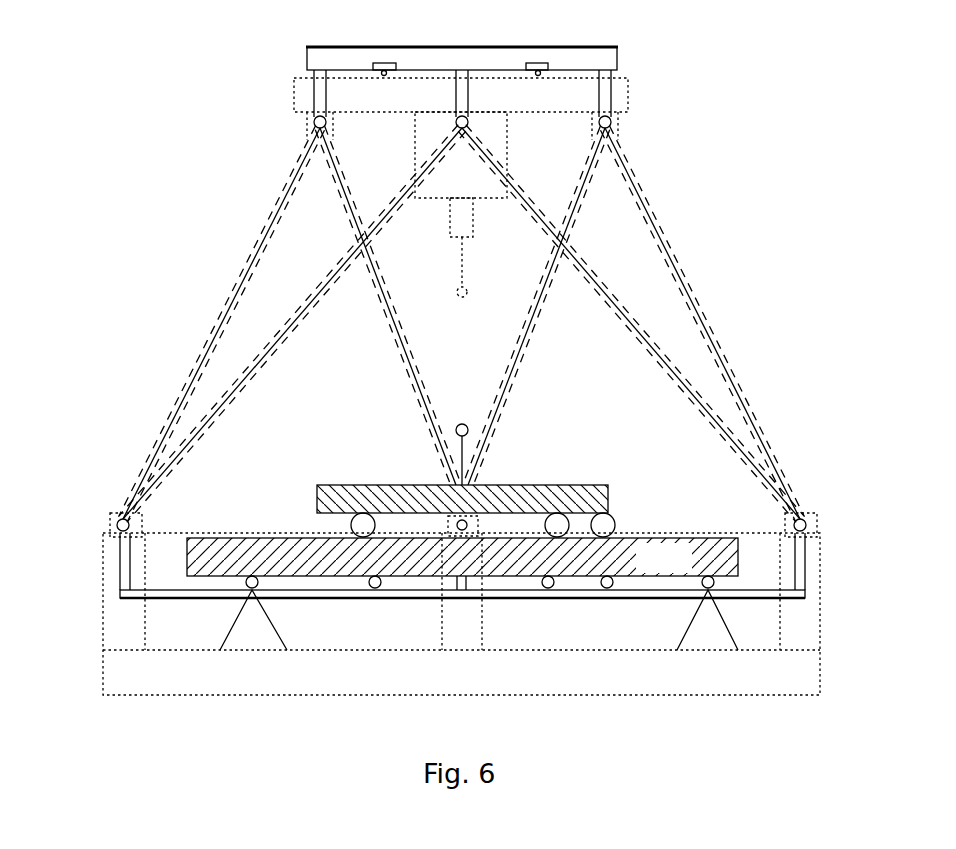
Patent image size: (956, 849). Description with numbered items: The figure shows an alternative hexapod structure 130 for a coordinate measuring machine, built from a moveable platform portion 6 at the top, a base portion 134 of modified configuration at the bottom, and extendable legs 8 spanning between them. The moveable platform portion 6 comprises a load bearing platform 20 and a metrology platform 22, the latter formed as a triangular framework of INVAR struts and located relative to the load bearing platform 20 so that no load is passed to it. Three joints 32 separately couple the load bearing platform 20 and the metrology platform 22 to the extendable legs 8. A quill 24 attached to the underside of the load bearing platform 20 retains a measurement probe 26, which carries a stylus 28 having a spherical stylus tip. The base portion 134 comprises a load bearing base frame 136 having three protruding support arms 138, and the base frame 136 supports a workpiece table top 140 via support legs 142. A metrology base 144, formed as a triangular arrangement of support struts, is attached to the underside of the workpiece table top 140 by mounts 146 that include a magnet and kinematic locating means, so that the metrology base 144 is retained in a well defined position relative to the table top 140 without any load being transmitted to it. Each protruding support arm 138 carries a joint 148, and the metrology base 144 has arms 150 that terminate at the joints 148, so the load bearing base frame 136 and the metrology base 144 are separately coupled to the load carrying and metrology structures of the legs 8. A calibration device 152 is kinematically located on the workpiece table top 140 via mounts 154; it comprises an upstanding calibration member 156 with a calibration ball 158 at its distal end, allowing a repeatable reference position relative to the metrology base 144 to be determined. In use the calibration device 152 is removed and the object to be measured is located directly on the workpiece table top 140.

The moveable platform portion 6 is at (268, 50).
The extendable legs 8 is at (216, 294).
The load bearing platform 20 is at (428, 107).
The metrology platform 22 is at (467, 62).
The quill 24 is at (475, 188).
The measurement probe 26 is at (476, 215).
The stylus 28 is at (452, 274).
The joints 32 is at (327, 124).
The hexapod structure 130 is at (696, 70).
The base portion 134 is at (93, 697).
The load bearing base frame 136 is at (430, 688).
The protruding support arms 138 is at (128, 606).
The workpiece table top 140 is at (682, 570).
The support legs 142 is at (258, 655).
The metrology base 144 is at (660, 600).
The mounts 146 is at (372, 592).
The joints 148 is at (148, 519).
The arms 150 is at (128, 558).
The calibration device 152 is at (622, 498).
The mounts 154 is at (357, 525).
The upstanding calibration member 156 is at (464, 456).
The calibration ball 158 is at (460, 424).